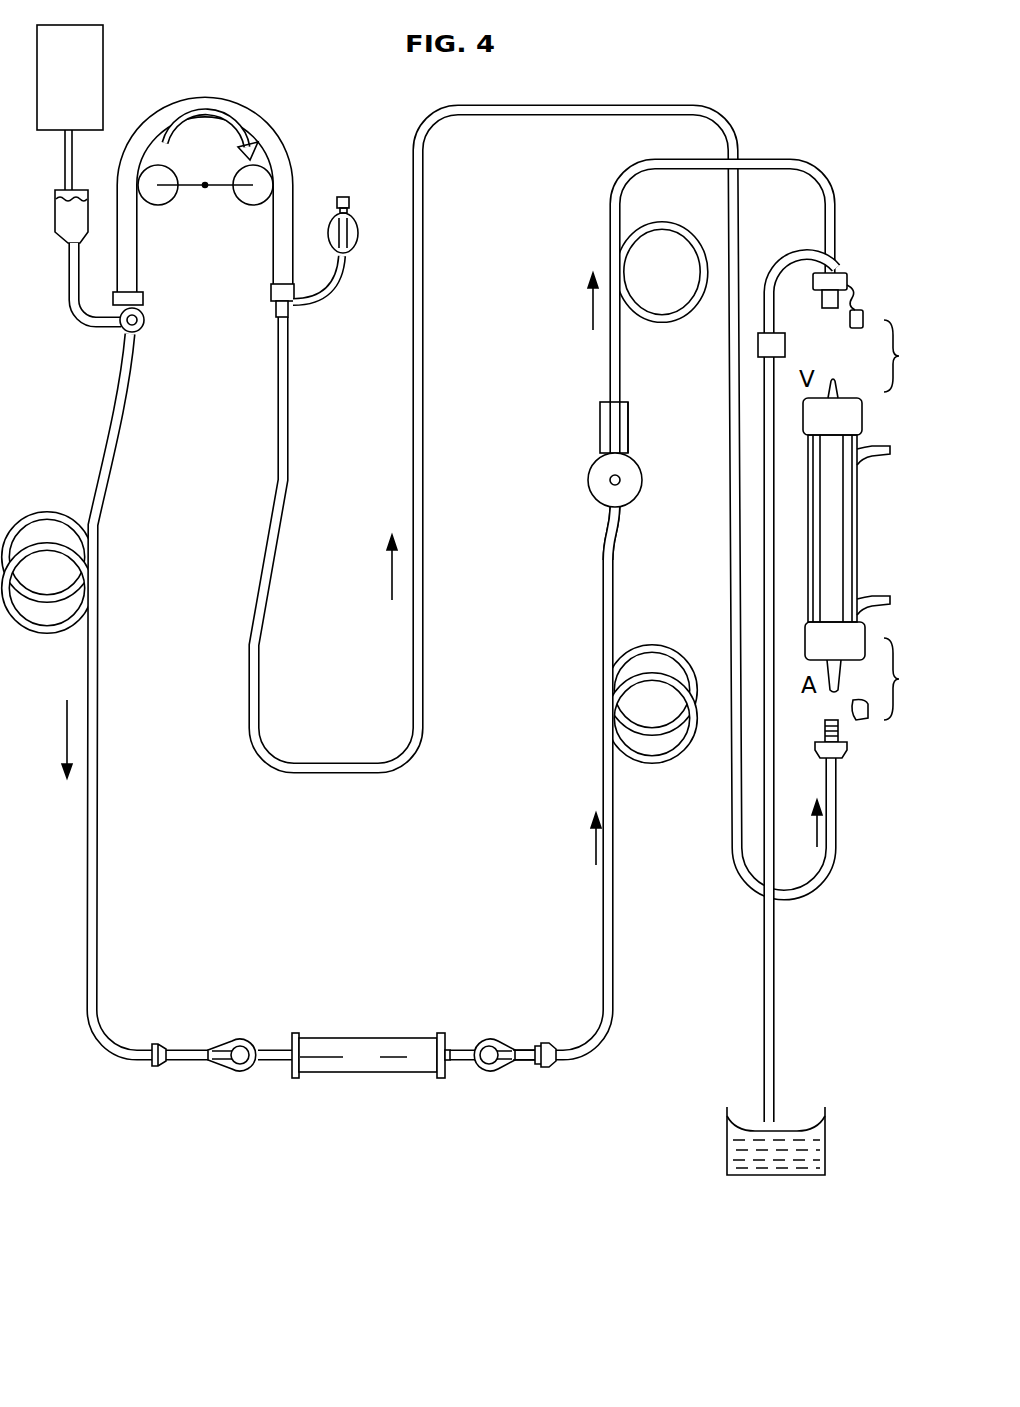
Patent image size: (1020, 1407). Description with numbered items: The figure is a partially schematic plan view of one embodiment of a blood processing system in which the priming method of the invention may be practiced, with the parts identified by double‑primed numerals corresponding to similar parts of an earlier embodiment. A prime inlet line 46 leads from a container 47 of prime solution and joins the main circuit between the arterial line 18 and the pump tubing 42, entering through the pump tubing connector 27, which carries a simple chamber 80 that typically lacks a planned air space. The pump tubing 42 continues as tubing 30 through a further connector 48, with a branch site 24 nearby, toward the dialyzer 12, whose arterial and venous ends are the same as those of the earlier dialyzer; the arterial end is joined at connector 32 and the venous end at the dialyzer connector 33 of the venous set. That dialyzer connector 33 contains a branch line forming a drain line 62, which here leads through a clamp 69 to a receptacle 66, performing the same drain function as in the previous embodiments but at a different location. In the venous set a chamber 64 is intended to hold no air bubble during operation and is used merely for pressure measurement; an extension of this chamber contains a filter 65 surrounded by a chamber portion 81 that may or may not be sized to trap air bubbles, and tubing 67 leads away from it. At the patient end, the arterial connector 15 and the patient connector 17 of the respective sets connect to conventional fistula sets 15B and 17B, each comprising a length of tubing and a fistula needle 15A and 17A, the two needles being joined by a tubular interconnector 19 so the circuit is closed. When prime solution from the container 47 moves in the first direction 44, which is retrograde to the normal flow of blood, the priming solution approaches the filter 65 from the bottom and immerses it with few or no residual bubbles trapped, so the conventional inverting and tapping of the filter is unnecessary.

The container 47 is at (84, 89).
The prime inlet line 46 is at (79, 262).
The pump tubing 42 is at (205, 130).
The pump tubing connector 27 is at (143, 297).
The arterial line 18 is at (97, 855).
The chamber 80 is at (121, 344).
The pump tubing segment 30 is at (413, 480).
The connector 48 is at (272, 290).
The injection site clamp 24 is at (335, 212).
The first direction 44 is at (93, 716).
The tubing segment 67 is at (623, 547).
The filter 65 is at (597, 428).
The chamber portion 81 is at (628, 416).
The chamber 64 is at (637, 467).
The drain line 62 is at (778, 962).
The clamp 69 is at (757, 346).
The dialyzer connector 33 is at (813, 277).
The dialyzer 12 is at (854, 535).
The arterial connector 32 is at (845, 757).
The drain container 66 is at (747, 1178).
The fistula needle 15A is at (334, 1043).
The arterial connector 15 is at (158, 1070).
The fistula set 15B is at (201, 1050).
The tubular interconnector 19 is at (381, 1040).
The fistula needle 17A is at (405, 1040).
The fistula set 17B is at (530, 1048).
The patient connector 17 is at (553, 1068).